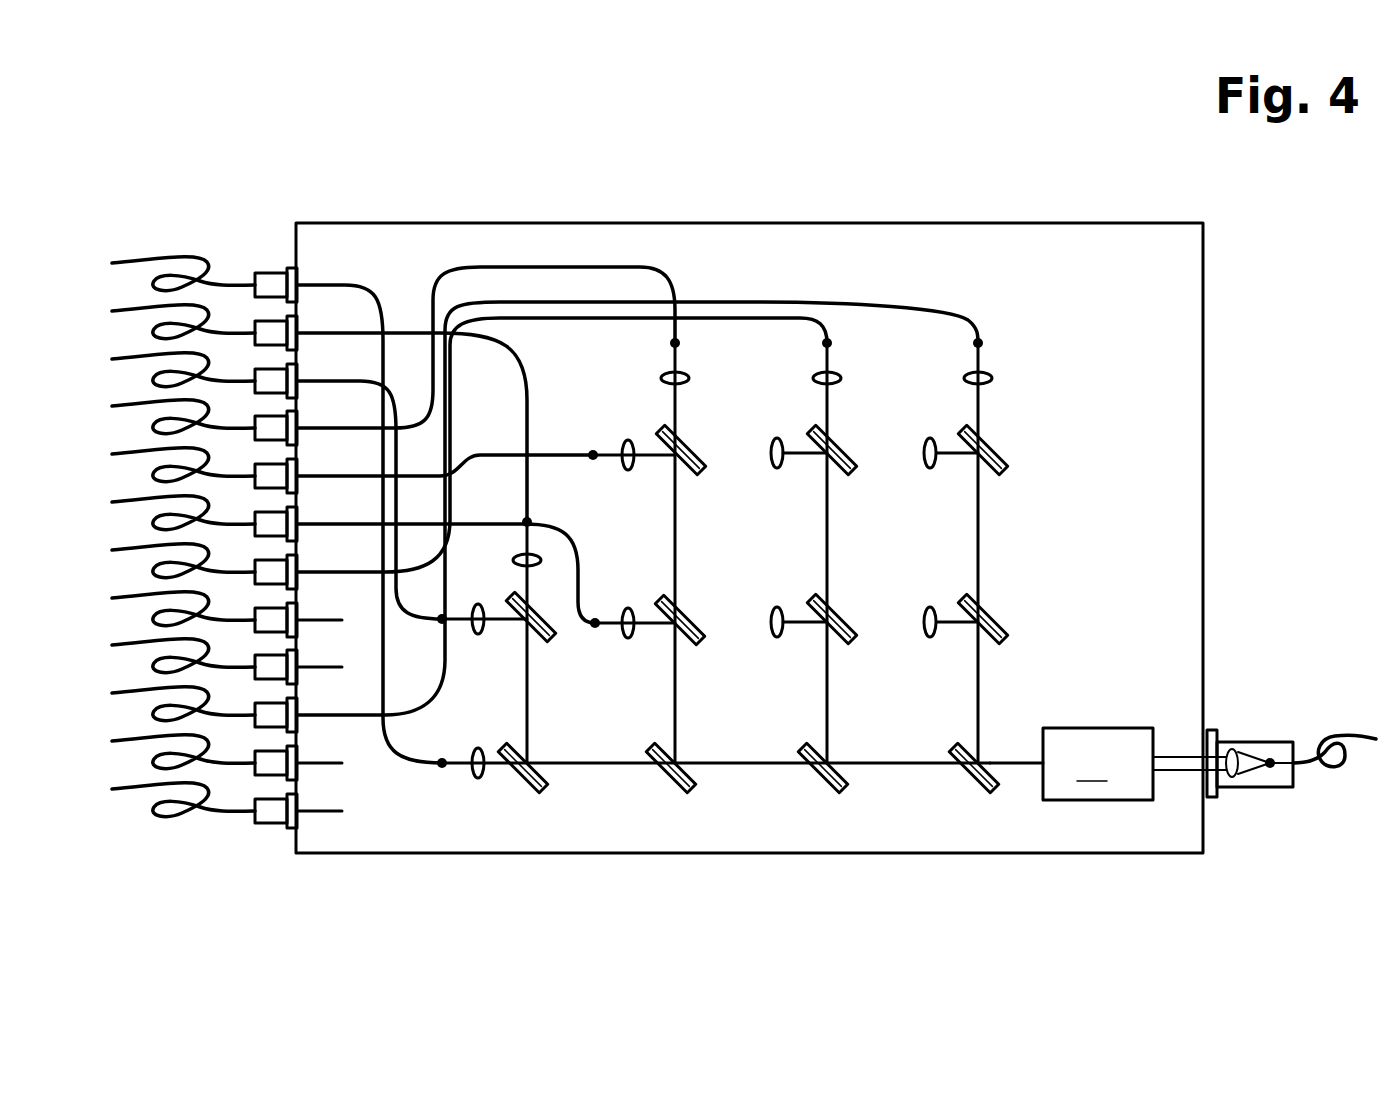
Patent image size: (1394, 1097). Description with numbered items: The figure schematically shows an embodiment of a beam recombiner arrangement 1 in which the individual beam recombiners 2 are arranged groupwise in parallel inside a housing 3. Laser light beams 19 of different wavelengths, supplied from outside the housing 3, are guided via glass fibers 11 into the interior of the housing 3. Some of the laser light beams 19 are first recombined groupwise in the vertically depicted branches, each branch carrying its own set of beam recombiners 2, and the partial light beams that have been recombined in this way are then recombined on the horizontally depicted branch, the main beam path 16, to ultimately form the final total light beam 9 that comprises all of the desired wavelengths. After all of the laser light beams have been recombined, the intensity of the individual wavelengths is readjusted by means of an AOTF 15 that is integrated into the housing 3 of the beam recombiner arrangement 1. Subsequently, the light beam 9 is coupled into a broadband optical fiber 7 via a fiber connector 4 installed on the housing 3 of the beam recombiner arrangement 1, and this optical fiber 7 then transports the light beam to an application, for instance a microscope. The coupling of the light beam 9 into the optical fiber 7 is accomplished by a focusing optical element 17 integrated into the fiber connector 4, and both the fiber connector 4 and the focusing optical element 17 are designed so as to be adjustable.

The beam recombiner arrangement 1 is at (836, 532).
The beam recombiner 2 is at (992, 450).
The housing 3 is at (543, 223).
The fiber connector 4 is at (268, 812).
The optical fiber 7 is at (1348, 768).
The light beam 9 is at (1028, 767).
The glass fiber 11 is at (182, 253).
The AOTF 15 is at (1134, 764).
The main beam path 16 is at (605, 767).
The focusing optical element 17 is at (1236, 789).
The laser light beam 19 is at (67, 202).